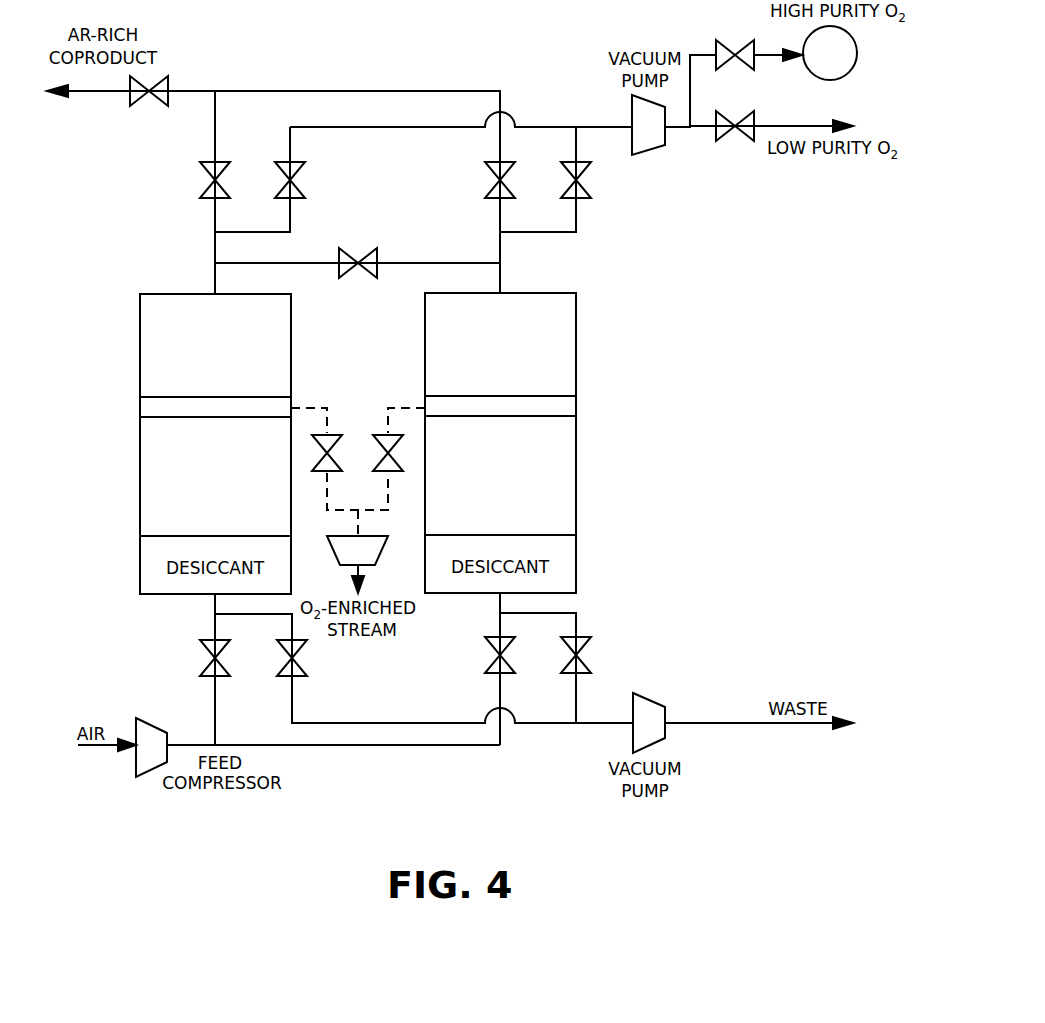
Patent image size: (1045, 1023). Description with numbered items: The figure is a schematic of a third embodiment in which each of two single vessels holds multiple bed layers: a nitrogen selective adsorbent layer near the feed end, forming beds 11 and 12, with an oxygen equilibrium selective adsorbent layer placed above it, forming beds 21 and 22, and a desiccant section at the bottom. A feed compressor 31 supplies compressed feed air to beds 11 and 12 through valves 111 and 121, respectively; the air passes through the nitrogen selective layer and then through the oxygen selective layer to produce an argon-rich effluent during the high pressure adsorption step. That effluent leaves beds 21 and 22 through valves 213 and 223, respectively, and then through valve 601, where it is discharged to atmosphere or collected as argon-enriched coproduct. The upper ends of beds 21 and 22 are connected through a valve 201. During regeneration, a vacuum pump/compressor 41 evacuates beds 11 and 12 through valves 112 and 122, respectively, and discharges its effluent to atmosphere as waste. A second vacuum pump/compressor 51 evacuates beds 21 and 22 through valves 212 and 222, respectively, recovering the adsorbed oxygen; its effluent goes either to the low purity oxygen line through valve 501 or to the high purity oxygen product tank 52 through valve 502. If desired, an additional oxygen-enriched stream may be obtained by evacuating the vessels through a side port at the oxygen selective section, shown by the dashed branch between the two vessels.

The adsorbing bed 11 is at (215, 476).
The adsorbing bed 12 is at (500, 475).
The adsorbing bed 21 is at (215, 345).
The adsorbing bed 22 is at (500, 344).
The feed compressor 31 is at (144, 761).
The vacuum pump/compressor 41 is at (636, 723).
The vacuum pump/compressor 51 is at (636, 125).
The high purity oxygen product tank 52 is at (830, 53).
The valve 111 is at (199, 658).
The valve 112 is at (308, 658).
The valve 121 is at (484, 655).
The valve 122 is at (592, 655).
The valve 201 is at (358, 275).
The valve 212 is at (306, 180).
The valve 213 is at (198, 180).
The valve 222 is at (592, 180).
The valve 223 is at (483, 180).
The valve 501 is at (735, 137).
The valve 502 is at (735, 46).
The valve 601 is at (149, 102).